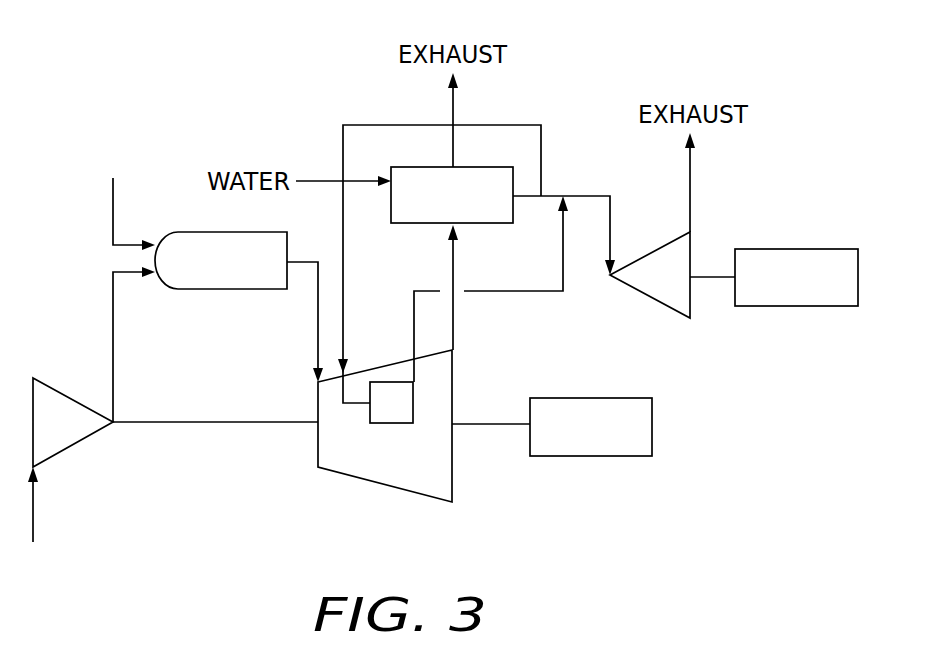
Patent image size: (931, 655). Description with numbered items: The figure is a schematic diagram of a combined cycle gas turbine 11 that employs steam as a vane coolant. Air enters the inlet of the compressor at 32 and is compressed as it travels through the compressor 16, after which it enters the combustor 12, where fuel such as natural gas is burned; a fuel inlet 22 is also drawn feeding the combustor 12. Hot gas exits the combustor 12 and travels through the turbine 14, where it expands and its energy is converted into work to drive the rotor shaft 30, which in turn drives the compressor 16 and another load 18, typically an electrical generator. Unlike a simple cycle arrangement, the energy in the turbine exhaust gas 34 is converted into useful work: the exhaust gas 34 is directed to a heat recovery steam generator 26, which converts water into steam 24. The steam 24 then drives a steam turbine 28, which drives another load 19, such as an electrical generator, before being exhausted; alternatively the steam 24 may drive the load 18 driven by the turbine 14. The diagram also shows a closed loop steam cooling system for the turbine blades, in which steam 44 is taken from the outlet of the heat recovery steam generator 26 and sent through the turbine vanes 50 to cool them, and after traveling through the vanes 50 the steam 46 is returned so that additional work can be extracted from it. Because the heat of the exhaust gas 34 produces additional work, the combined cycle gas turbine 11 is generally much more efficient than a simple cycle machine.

The combined cycle gas turbine 11 is at (232, 120).
The combustor 12 is at (221, 260).
The turbine 14 is at (385, 426).
The compressor 16 is at (73, 422).
The load 18 is at (591, 427).
The load 19 is at (774, 277).
The fuel inlet 22 is at (126, 199).
The steam 24 is at (575, 196).
The heat recovery steam generator 26 is at (452, 195).
The steam turbine 28 is at (650, 275).
The rotor shaft 30 is at (180, 425).
The compressor inlet 32 is at (31, 522).
The turbine exhaust gas 34 is at (453, 318).
The steam 44 is at (384, 125).
The steam 46 is at (520, 291).
The turbine vanes 50 is at (391, 402).